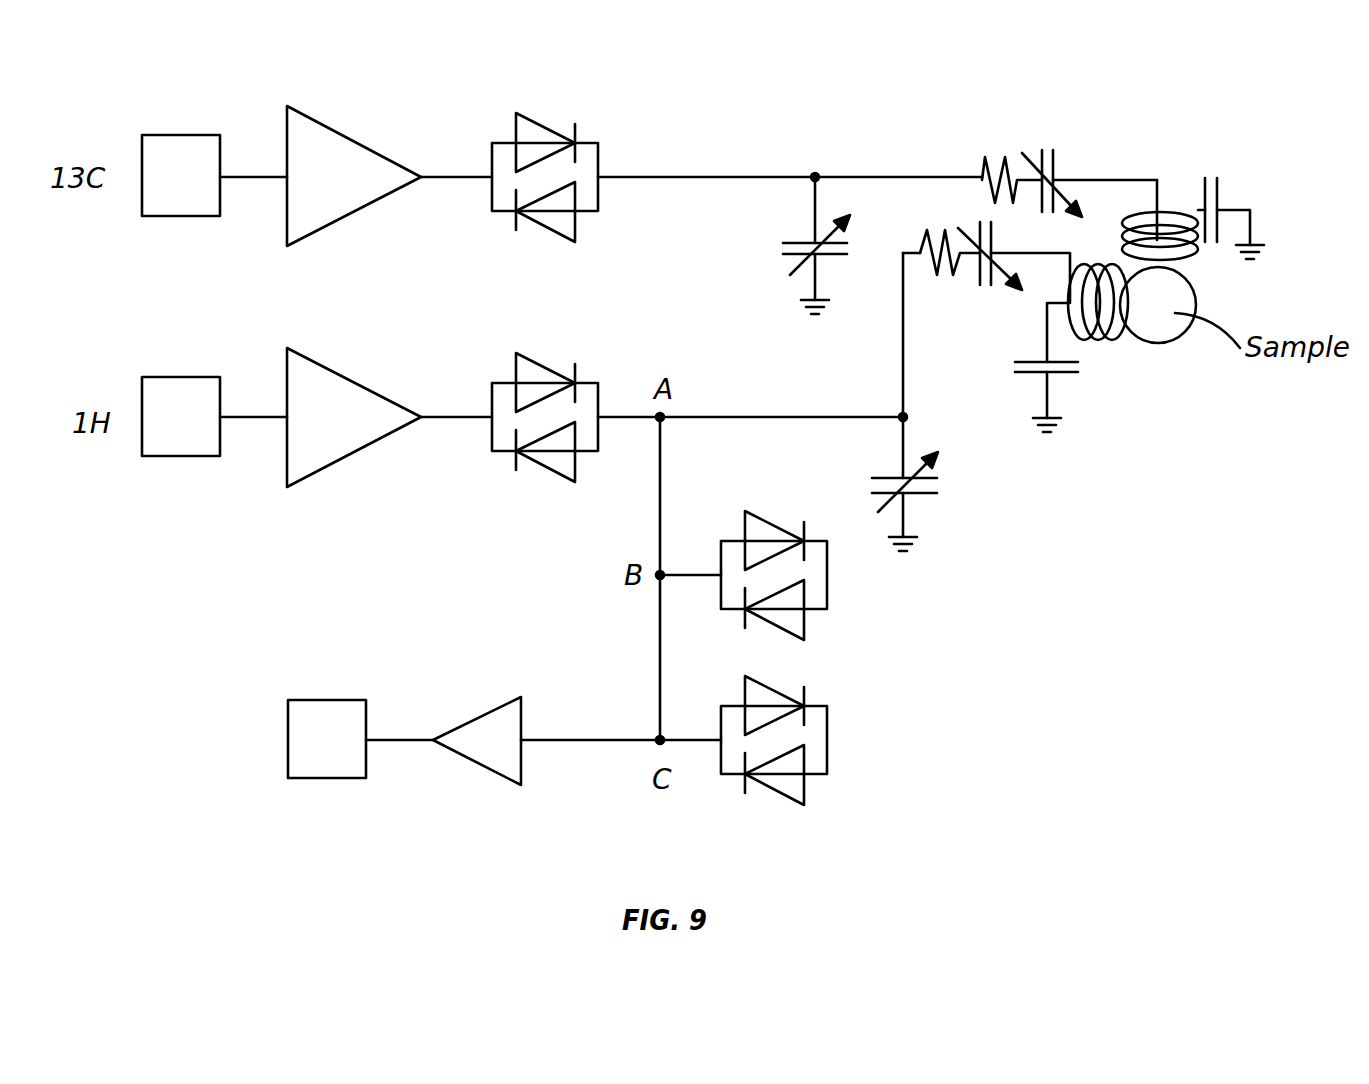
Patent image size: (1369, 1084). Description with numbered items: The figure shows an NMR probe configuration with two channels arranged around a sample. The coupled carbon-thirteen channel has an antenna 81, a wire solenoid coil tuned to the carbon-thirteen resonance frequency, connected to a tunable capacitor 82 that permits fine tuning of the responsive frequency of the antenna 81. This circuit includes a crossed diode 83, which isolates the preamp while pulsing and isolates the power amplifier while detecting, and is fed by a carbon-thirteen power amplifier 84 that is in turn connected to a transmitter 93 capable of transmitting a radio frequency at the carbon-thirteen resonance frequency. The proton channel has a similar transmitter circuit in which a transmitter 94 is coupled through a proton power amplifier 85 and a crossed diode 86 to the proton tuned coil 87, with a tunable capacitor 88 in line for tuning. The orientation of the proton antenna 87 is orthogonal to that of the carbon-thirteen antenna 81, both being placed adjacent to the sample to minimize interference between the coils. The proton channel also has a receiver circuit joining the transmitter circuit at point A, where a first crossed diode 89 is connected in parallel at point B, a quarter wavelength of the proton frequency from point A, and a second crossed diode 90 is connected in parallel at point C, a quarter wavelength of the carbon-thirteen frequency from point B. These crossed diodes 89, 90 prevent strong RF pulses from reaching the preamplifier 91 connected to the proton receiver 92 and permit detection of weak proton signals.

The antenna 81 is at (1180, 210).
The tunable capacitor 82 is at (1043, 148).
The crossed diode 83 is at (583, 140).
The 13C power amplifier 84 is at (353, 133).
The 1H power amplifier 85 is at (352, 453).
The crossed diode 86 is at (583, 380).
The 1H tuned coil 87 is at (1093, 342).
The tunable capacitor 88 is at (983, 287).
The first crossed diode 89 is at (817, 612).
The second crossed diode 90 is at (817, 777).
The preamplifier 91 is at (480, 767).
The 1H receiver 92 is at (317, 778).
The transmitter 93 is at (170, 135).
The transmitter 94 is at (170, 456).